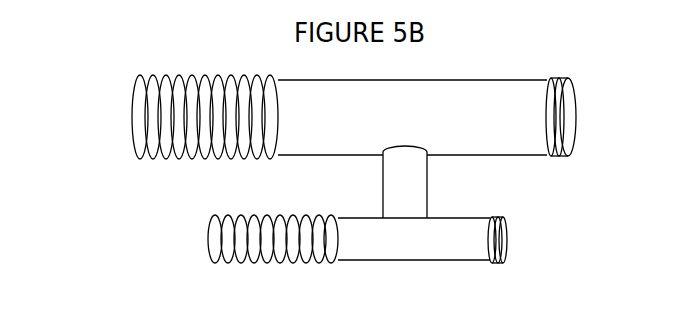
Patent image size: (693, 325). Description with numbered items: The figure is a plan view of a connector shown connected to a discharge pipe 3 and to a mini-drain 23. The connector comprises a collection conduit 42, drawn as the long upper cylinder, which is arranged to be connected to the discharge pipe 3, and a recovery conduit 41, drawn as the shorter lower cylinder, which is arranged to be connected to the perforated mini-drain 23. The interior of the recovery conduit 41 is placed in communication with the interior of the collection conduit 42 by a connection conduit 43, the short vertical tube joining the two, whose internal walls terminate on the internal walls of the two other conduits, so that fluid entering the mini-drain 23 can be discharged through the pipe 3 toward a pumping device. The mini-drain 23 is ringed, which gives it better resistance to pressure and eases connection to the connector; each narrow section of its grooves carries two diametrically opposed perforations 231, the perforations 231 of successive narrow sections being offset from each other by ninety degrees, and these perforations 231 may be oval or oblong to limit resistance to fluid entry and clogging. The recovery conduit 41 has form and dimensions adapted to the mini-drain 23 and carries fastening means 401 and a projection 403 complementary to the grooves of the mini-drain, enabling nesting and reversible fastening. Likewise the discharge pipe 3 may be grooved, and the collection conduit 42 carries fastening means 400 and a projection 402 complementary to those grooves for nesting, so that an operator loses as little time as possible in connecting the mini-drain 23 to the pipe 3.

The discharge pipe 3 is at (133, 112).
The collection conduit 42 is at (510, 142).
The fastening means of the discharge pipes 400 is at (558, 118).
The projection 402 is at (573, 88).
The connection conduit 43 is at (393, 193).
The recovery conduit 41 is at (422, 249).
The mini-drain 23 is at (210, 256).
The perforations 231 is at (228, 253).
The projection 403 is at (506, 228).
The fastening means of the mini-drains 401 is at (500, 260).